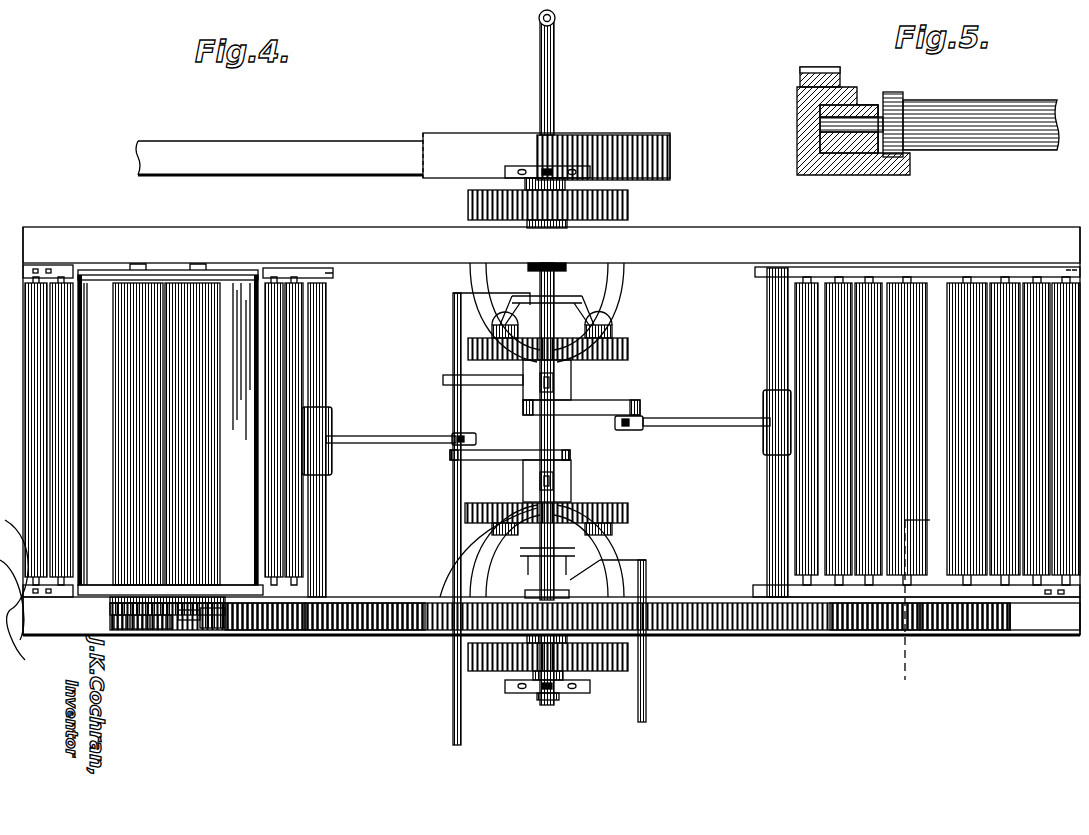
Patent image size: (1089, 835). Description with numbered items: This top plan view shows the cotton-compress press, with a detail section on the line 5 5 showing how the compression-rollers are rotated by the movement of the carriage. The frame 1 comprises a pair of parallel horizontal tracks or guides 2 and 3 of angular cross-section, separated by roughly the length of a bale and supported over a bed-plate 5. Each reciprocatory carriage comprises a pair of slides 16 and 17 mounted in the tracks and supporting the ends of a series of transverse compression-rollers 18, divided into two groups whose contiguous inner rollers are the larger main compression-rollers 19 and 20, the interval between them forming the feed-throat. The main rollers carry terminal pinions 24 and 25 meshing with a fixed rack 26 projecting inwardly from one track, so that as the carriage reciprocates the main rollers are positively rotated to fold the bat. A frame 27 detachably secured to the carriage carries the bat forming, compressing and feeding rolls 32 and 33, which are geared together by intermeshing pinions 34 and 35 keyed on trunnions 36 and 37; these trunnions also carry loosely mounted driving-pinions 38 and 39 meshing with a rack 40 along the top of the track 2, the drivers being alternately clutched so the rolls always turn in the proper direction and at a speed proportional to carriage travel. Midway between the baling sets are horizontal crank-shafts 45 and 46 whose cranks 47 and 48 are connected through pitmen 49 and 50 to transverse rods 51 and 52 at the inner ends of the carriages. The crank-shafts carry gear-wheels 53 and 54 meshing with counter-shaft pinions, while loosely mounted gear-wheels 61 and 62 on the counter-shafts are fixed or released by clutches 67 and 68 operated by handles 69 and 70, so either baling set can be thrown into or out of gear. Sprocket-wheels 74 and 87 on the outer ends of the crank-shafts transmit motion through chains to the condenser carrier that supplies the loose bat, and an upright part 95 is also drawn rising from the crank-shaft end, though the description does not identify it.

In FIG. 4, the frame 1 is at (551, 431).
In FIG. 4, the track or guide 2 is at (373, 633).
In FIG. 5, the track or guide 2 is at (797, 134).
In FIG. 4, the track or guide 3 is at (551, 245).
In FIG. 4, the bed-plate 5 is at (920, 605).
In FIG. 4, the slide 16 is at (333, 276).
In FIG. 4, the slide 17 is at (343, 592).
In FIG. 5, the slide 17 is at (828, 172).
In FIG. 4, the compression-rollers 18 is at (60, 308).
In FIG. 4, the main compression-roller 19 is at (905, 292).
In FIG. 5, the main compression-roller 19 is at (945, 142).
In FIG. 4, the main compression-roller 20 is at (972, 292).
In FIG. 4, the terminal pinion 24 is at (886, 598).
In FIG. 5, the terminal pinion 24 is at (895, 95).
In FIG. 4, the terminal pinion 25 is at (972, 598).
In FIG. 4, the fixed rack 26 is at (1015, 592).
In FIG. 5, the fixed rack 26 is at (885, 176).
In FIG. 4, the frame 27 is at (155, 270).
In FIG. 4, the bat forming, compressing and feeding roll 32 is at (120, 352).
In FIG. 4, the bat forming, compressing and feeding roll 33 is at (208, 340).
In FIG. 4, the intermeshing pinion 34 is at (112, 600).
In FIG. 4, the intermeshing pinion 35 is at (266, 630).
In FIG. 4, the trunnion 36 is at (126, 631).
In FIG. 4, the trunnion 37 is at (192, 632).
In FIG. 4, the driving-pinion 38 is at (112, 612).
In FIG. 4, the driving-pinion 39 is at (222, 622).
In FIG. 4, the rack 40 is at (333, 633).
In FIG. 5, the rack 40 is at (813, 67).
In FIG. 4, the crank-shaft 45 is at (556, 136).
In FIG. 4, the crank-shaft 46 is at (556, 282).
In FIG. 4, the crank 47 is at (476, 439).
In FIG. 4, the crank 48 is at (598, 414).
In FIG. 4, the pitman 49 is at (386, 443).
In FIG. 4, the pitman 50 is at (690, 424).
In FIG. 4, the transverse rod 51 is at (326, 522).
In FIG. 4, the transverse rod 52 is at (768, 506).
In FIG. 4, the gear-wheel 53 is at (468, 658).
In FIG. 4, the gear-wheel 54 is at (629, 205).
In FIG. 4, the gear-wheel 61 is at (500, 504).
In FIG. 4, the gear-wheel 62 is at (620, 340).
In FIG. 4, the clutch 67 is at (497, 535).
In FIG. 4, the clutch 68 is at (497, 328).
In FIG. 4, the handle 69 is at (647, 662).
In FIG. 4, the handle 70 is at (453, 502).
In FIG. 4, the sprocket-wheel 74 is at (530, 694).
In FIG. 4, the sprocket-wheel 87 is at (520, 167).
In FIG. 4, the rod 95 is at (555, 48).